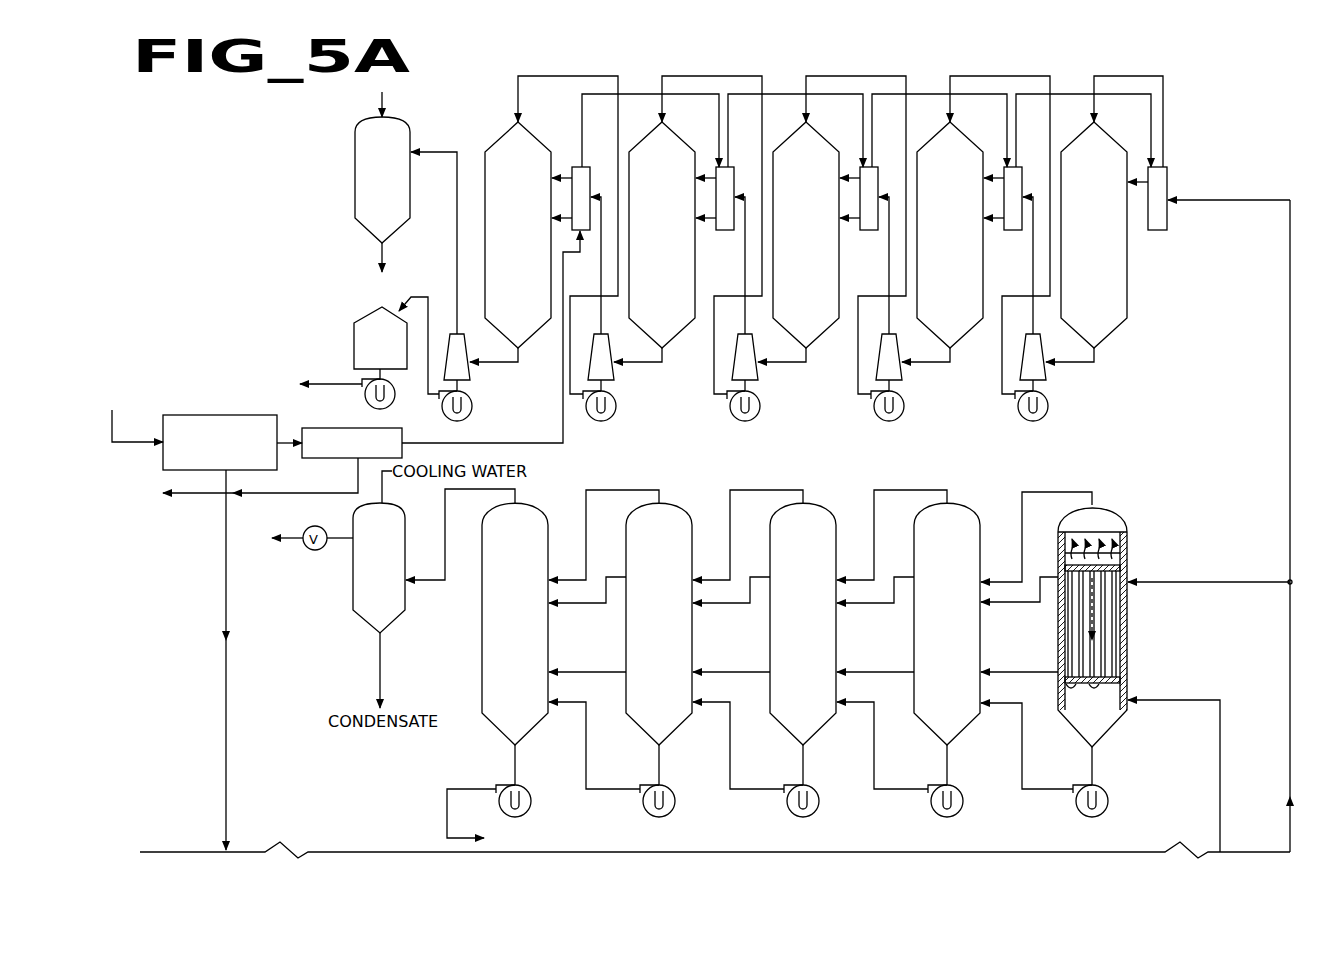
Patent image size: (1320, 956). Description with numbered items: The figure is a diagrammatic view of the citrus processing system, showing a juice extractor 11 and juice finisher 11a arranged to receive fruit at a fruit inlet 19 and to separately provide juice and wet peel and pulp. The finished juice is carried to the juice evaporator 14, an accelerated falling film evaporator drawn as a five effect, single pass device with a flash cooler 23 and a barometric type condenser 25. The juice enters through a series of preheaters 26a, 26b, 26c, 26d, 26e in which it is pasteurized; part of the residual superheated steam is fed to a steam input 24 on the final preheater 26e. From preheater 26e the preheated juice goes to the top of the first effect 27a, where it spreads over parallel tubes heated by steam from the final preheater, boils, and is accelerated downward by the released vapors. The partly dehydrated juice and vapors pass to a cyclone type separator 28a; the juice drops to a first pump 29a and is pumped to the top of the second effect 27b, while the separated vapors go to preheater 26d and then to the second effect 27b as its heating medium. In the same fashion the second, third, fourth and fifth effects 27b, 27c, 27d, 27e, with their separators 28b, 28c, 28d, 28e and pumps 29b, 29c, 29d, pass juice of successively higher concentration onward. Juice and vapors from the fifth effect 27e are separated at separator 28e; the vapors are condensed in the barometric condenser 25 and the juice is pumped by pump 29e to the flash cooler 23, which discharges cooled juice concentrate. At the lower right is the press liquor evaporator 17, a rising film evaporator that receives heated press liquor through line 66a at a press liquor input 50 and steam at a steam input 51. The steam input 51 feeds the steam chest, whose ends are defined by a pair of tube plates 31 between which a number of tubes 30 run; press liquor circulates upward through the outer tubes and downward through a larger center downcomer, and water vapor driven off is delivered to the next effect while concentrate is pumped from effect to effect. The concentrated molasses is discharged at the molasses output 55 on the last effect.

The juice extractor 11 is at (226, 415).
The juice finisher 11a is at (348, 428).
The fruit inlet 19 is at (163, 450).
The juice evaporator 14 is at (1182, 283).
The press liquor evaporator 17 is at (1190, 648).
The flash cooler 23 is at (354, 332).
The steam input 24 is at (1170, 197).
The barometric condenser 25 is at (355, 178).
The preheater 26a is at (572, 168).
The preheater 26b is at (716, 168).
The preheater 26c is at (860, 168).
The preheater 26d is at (1004, 168).
The final preheater 26e is at (1148, 168).
The first effect 27a is at (1110, 266).
The second effect 27b is at (966, 266).
The third effect 27c is at (822, 266).
The fourth effect 27d is at (678, 266).
The fifth effect 27e is at (534, 266).
The cyclone type separator 28a is at (1046, 379).
The separator 28b is at (902, 379).
The separator 28c is at (758, 379).
The separator 28d is at (614, 379).
The separator 28e is at (470, 379).
The first pump 29a is at (1048, 400).
The pump 29b is at (904, 400).
The pump 29c is at (760, 400).
The pump 29d is at (616, 400).
The pump 29e is at (472, 400).
The tubes 30 is at (1115, 646).
The tube plates 31 is at (1107, 568).
The press liquor input 50 is at (1128, 700).
The steam input 51 is at (1131, 580).
The molasses output 55 is at (515, 764).
The line 66a is at (1220, 797).